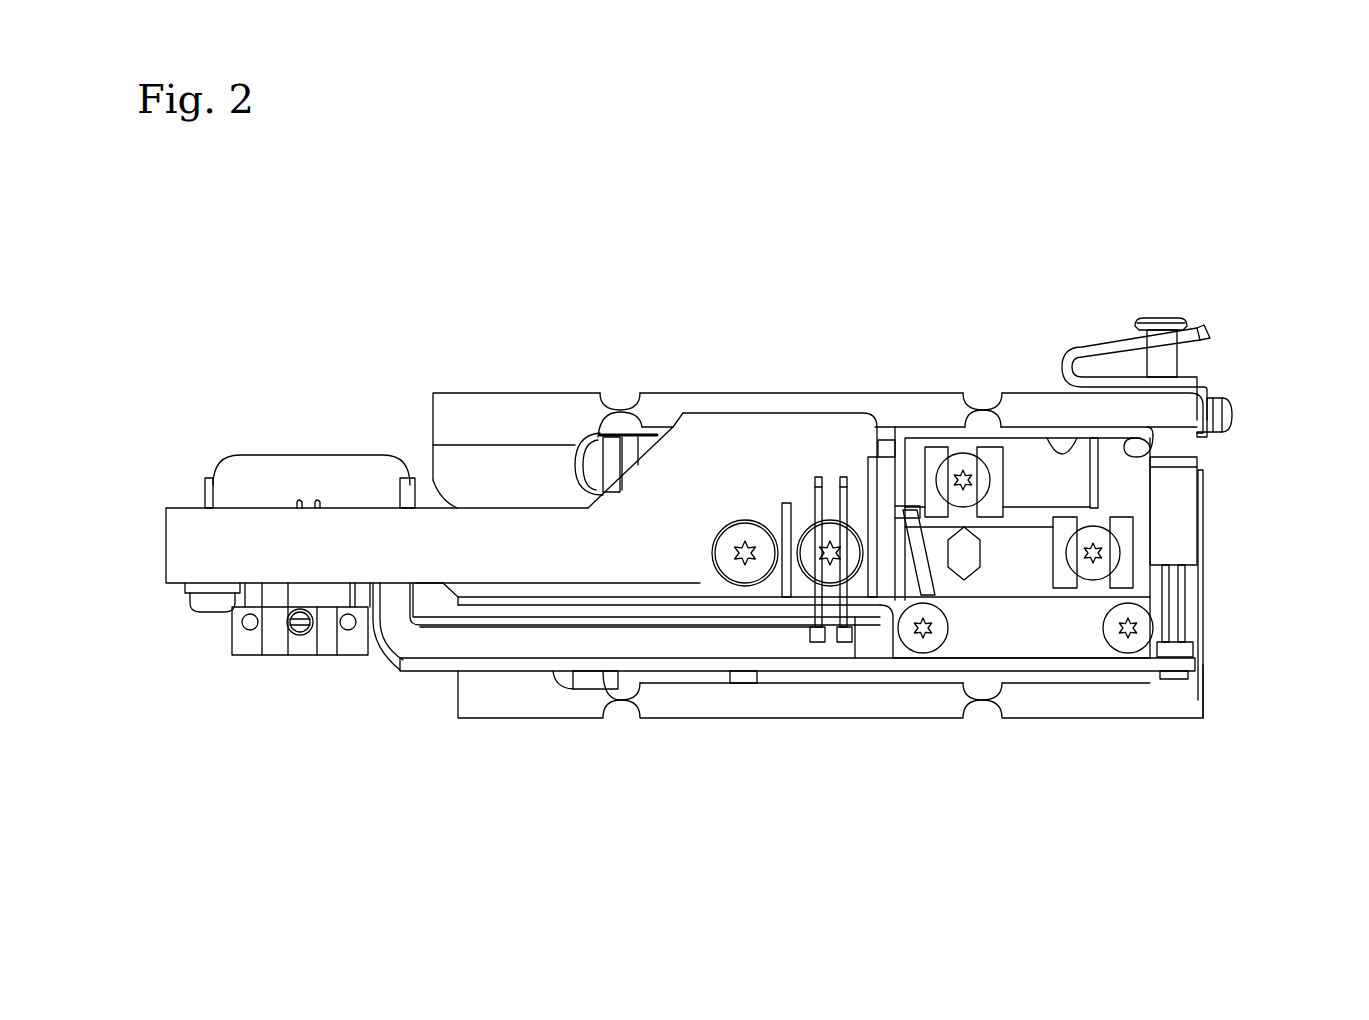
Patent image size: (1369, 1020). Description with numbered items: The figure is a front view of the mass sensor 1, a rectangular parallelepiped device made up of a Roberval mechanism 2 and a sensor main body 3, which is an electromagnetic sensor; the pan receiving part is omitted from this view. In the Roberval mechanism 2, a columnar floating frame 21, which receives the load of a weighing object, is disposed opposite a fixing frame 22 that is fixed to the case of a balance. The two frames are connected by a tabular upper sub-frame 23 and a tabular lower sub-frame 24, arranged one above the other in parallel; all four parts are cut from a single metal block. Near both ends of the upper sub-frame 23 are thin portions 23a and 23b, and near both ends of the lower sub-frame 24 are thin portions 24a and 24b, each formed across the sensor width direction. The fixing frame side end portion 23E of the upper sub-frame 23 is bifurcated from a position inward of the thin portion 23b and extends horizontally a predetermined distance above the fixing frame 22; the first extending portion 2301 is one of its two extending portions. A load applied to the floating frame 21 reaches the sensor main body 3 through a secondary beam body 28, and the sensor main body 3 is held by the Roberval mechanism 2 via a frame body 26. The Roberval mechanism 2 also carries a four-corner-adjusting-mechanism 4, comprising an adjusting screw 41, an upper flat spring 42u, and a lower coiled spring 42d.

The mass sensor 1 is at (255, 317).
The Roberval mechanism 2 is at (460, 388).
The sensor main body 3 is at (250, 463).
The four-corner-adjusting-mechanism 4 is at (1180, 339).
The floating frame 21 is at (470, 467).
The fixing frame 22 is at (1199, 577).
The upper sub-frame 23 is at (778, 395).
The thin portion 23a is at (621, 408).
The thin portion 23b is at (985, 408).
The fixing frame side end portion 23E is at (1035, 410).
The first extending portion 2301 is at (1188, 410).
The lower sub-frame 24 is at (794, 705).
The thin portion 24a is at (621, 702).
The thin portion 24b is at (982, 702).
The frame body 26 is at (176, 550).
The secondary beam body 28 is at (1068, 633).
The adjusting screw 41 is at (1137, 312).
The flat spring 42u is at (1199, 328).
The coiled spring 42d is at (1147, 458).